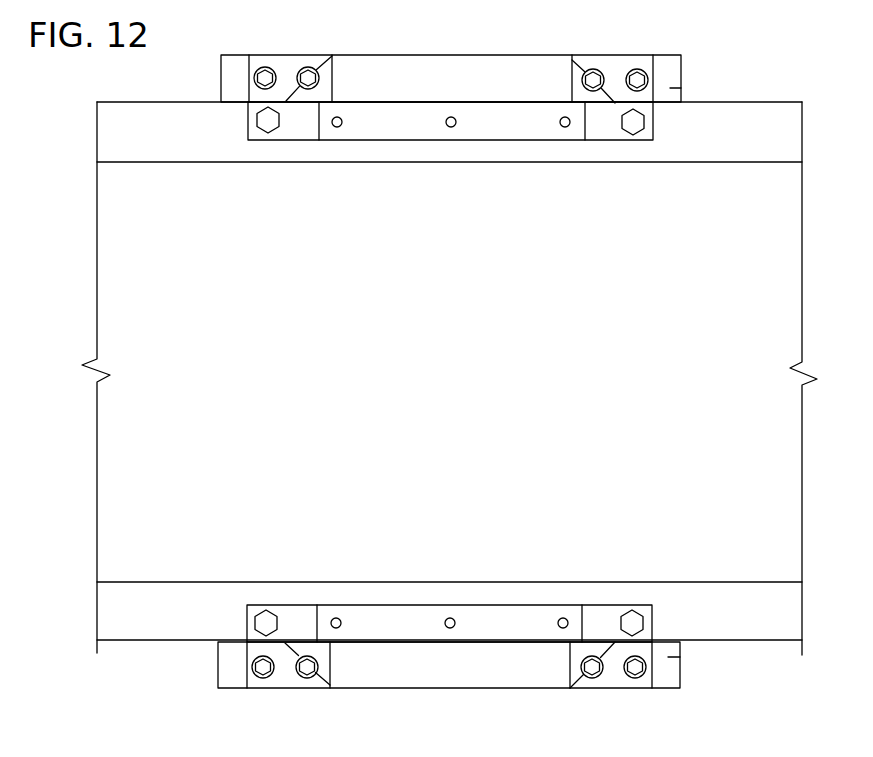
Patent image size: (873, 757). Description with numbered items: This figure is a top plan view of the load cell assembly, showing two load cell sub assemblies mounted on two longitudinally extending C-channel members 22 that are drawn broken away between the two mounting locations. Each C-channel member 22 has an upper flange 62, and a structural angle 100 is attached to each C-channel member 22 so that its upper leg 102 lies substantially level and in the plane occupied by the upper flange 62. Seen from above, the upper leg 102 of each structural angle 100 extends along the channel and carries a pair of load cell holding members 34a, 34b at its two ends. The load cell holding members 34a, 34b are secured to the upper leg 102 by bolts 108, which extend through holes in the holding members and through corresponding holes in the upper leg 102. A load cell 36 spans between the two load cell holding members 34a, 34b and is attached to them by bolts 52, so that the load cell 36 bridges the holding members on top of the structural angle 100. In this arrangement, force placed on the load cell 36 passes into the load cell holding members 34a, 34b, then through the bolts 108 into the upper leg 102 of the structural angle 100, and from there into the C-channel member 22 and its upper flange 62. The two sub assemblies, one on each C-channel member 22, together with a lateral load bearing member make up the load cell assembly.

The C-channel member 22 is at (147, 147).
The upper flange 62 is at (180, 602).
The load cell 36 is at (395, 127).
The bolt 52 is at (268, 124).
The load cell holding member 34a is at (285, 68).
The load cell holding member 34b is at (615, 68).
The bolt 108 is at (265, 67).
The structural angle 100 is at (670, 65).
The upper leg 102 is at (670, 88).